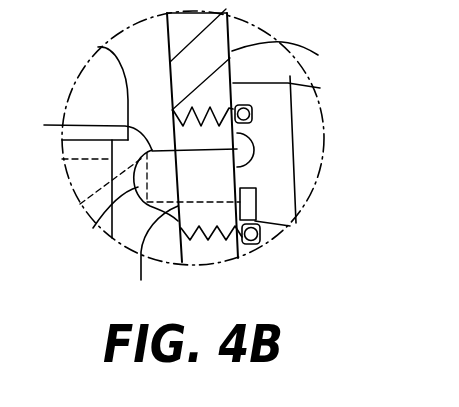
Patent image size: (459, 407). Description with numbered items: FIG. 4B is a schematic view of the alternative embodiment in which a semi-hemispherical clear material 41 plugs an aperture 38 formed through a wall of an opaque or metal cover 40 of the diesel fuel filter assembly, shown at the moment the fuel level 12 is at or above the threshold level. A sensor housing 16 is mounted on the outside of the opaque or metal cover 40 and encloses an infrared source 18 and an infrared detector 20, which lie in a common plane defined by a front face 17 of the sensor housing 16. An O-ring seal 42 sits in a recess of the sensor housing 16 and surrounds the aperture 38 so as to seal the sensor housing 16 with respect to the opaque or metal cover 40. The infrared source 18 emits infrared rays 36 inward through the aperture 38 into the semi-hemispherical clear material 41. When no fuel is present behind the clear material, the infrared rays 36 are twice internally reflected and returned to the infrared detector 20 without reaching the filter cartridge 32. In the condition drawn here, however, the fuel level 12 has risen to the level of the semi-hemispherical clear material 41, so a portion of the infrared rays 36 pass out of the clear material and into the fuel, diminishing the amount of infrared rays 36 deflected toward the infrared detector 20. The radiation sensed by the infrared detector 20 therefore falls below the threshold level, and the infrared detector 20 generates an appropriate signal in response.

The fluid level 12 is at (85, 130).
The sensor housing 16 is at (309, 82).
The front face 17 is at (290, 226).
The infrared source 18 is at (255, 150).
The infrared detector 20 is at (256, 205).
The filter cartridge 32 is at (106, 41).
The infrared rays 36 is at (170, 150).
The aperture 38 is at (211, 264).
The opaque or metal cover 40 is at (285, 48).
The semi-hemispherical clear material 41 is at (152, 256).
The O-ring seal 42 is at (252, 114).